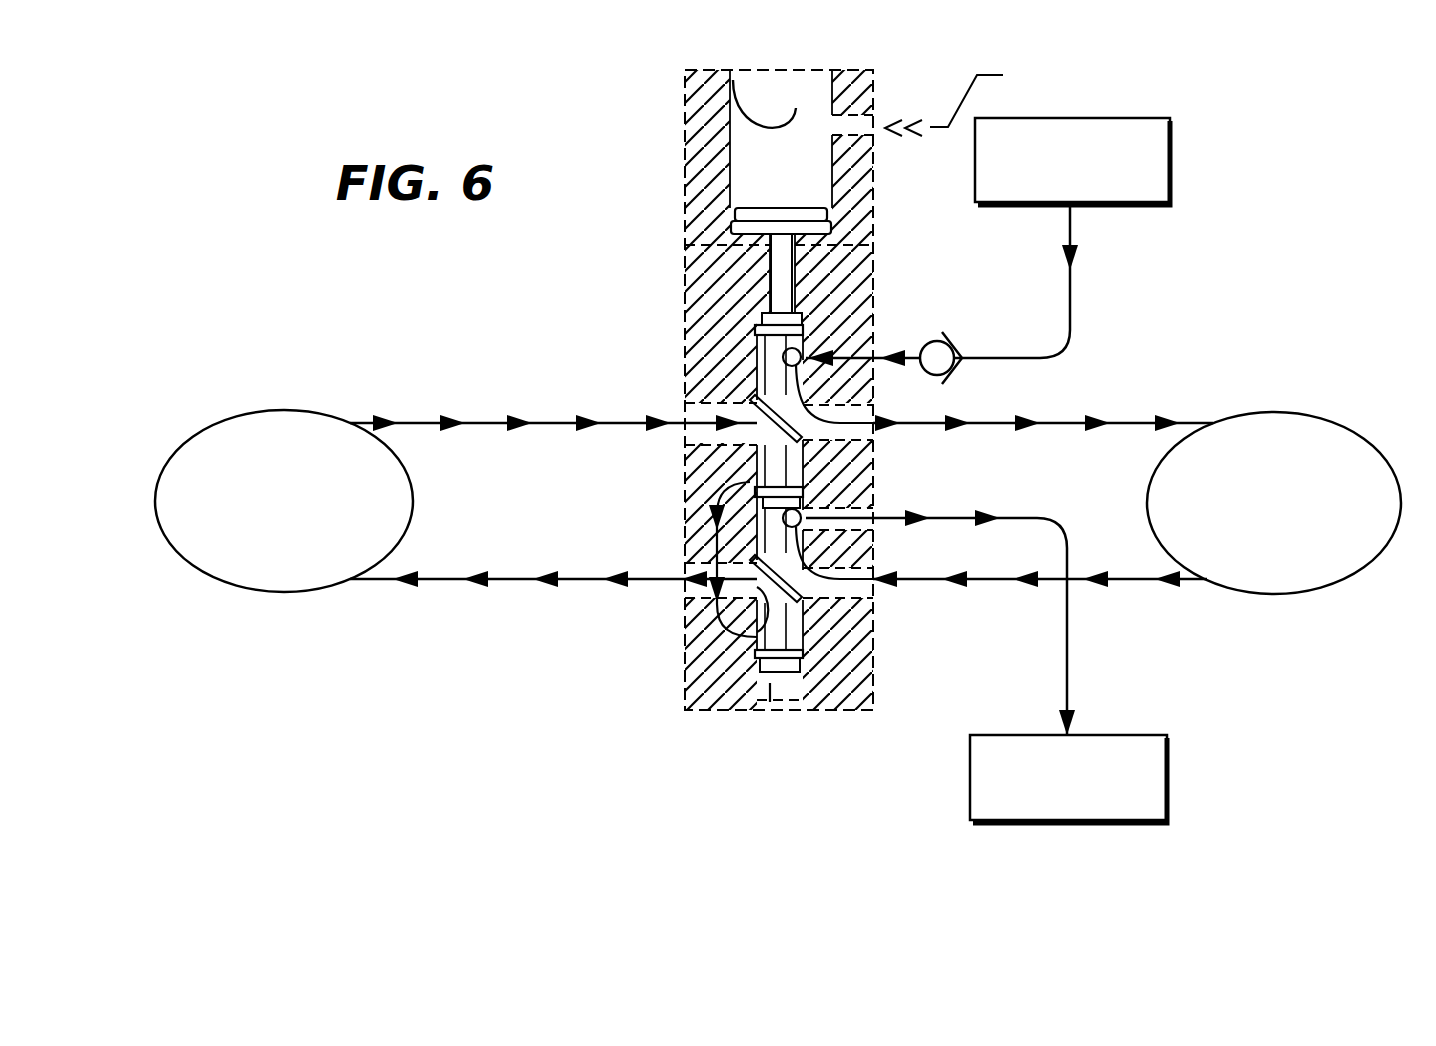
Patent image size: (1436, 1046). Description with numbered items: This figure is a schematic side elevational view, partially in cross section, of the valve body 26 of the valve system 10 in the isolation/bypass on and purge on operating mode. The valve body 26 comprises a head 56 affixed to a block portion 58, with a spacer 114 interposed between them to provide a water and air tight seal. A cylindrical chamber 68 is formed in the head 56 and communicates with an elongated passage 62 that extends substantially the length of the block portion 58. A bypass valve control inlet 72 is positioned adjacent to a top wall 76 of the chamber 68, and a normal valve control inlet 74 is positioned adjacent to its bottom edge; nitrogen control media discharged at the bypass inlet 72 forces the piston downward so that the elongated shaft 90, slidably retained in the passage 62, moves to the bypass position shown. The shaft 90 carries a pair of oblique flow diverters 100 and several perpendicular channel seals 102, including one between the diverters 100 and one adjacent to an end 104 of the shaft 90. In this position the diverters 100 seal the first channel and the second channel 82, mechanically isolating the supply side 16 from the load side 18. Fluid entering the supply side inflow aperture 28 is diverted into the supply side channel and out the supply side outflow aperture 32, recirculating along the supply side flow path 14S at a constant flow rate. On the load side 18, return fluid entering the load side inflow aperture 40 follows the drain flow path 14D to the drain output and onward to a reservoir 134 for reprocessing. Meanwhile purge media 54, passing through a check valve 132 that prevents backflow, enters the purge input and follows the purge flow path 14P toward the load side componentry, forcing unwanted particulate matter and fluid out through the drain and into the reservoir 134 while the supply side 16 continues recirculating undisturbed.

The valve system 10 is at (1285, 175).
The purge flow path 14P is at (822, 420).
The supply side recirculating flow path 14S is at (695, 503).
The drain flow path 14D is at (830, 553).
The supply side 16 is at (268, 594).
The load side 18 is at (1337, 420).
The valve body 26 is at (662, 345).
The inflow aperture 28 is at (705, 413).
The outflow aperture 32 is at (690, 597).
The inflow aperture 40 is at (840, 590).
The purge media 54 is at (1125, 203).
The head 56 is at (686, 132).
The block portion 58 is at (690, 484).
The elongated passage 62 is at (770, 702).
The cylindrical chamber 68 is at (795, 160).
The bypass valve control inlet 72 is at (880, 130).
The normal valve control inlet 74 is at (873, 240).
The top wall 76 is at (733, 80).
The second channel 82 is at (845, 608).
The elongated shaft 90 is at (815, 463).
The flow diverters 100 is at (806, 440).
The channel seals 102 is at (760, 332).
The end of the shaft 104 is at (787, 660).
The spacer 114 is at (703, 265).
The check valve 132 is at (945, 343).
The reservoir 134 is at (1125, 735).